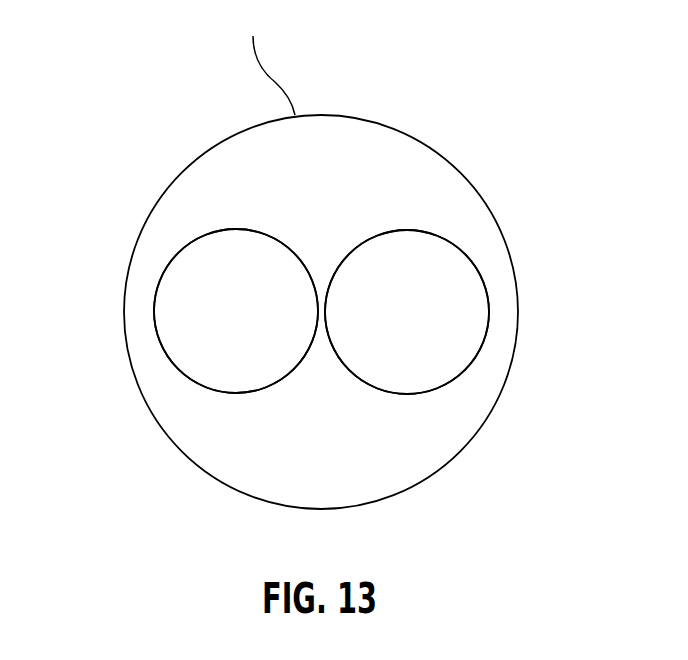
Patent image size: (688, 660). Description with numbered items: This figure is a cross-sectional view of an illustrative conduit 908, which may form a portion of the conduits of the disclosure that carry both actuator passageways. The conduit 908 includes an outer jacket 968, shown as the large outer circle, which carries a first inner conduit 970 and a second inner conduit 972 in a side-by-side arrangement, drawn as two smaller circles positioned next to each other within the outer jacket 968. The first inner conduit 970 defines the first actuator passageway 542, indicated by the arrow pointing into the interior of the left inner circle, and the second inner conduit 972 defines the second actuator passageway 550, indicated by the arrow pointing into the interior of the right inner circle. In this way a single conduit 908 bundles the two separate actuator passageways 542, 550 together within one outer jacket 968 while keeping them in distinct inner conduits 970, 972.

The conduit 908 is at (488, 175).
The outer jacket 968 is at (261, 57).
The first inner conduit 970 is at (153, 313).
The second inner conduit 972 is at (489, 313).
The first actuator passageway 542 is at (192, 277).
The second actuator passageway 550 is at (445, 343).